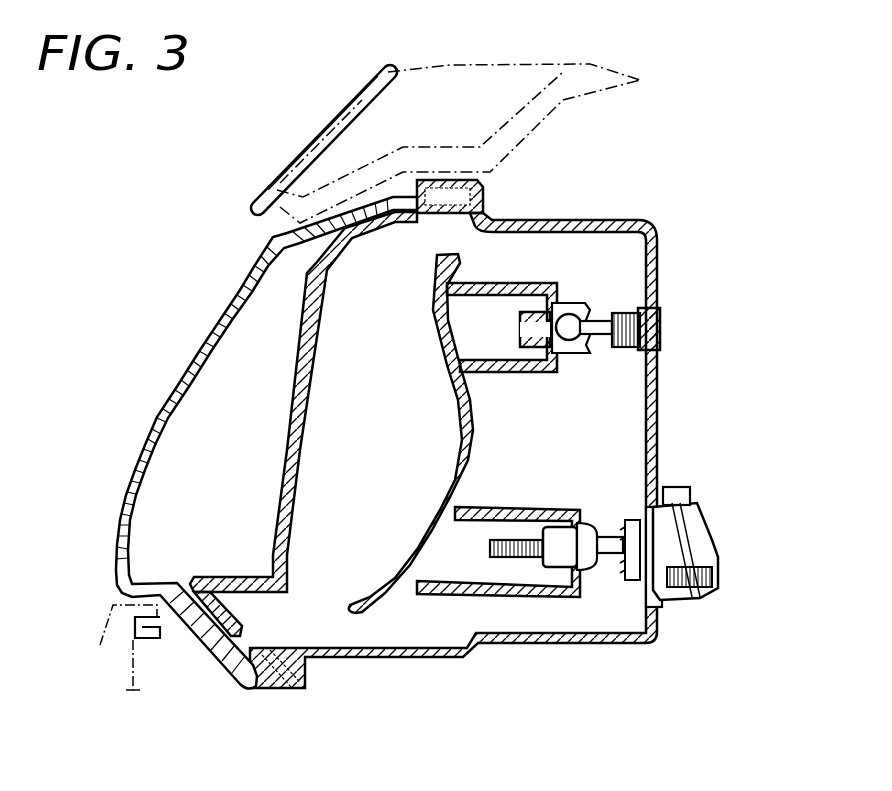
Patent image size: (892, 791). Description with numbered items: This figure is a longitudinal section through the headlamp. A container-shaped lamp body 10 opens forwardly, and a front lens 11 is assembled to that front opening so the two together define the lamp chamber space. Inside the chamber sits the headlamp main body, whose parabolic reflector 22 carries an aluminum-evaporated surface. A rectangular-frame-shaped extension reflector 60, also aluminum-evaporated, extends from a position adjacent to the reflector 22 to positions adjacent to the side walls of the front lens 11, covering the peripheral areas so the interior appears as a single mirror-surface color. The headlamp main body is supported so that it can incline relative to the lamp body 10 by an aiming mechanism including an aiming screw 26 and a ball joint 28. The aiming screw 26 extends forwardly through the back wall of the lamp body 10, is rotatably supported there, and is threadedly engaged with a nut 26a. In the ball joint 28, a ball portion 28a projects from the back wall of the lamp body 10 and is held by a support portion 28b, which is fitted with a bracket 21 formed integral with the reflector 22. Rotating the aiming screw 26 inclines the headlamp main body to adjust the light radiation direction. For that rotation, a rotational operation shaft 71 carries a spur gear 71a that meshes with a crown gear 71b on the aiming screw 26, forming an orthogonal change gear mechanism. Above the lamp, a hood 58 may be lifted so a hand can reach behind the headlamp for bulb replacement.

The lamp body 10 is at (545, 220).
The front lens 11 is at (150, 418).
The bracket 21 is at (533, 370).
The reflector 22 is at (450, 372).
The aiming screw 26 is at (520, 557).
The nut 26a is at (557, 567).
The ball joint 28 is at (653, 279).
The ball portion 28a is at (594, 315).
The support portion 28b is at (567, 302).
The hood 58 is at (313, 140).
The extension reflector 60 is at (280, 510).
The rotational operation shaft 71 is at (721, 585).
The spur gear 71a is at (713, 573).
The crown gear 71b is at (660, 607).